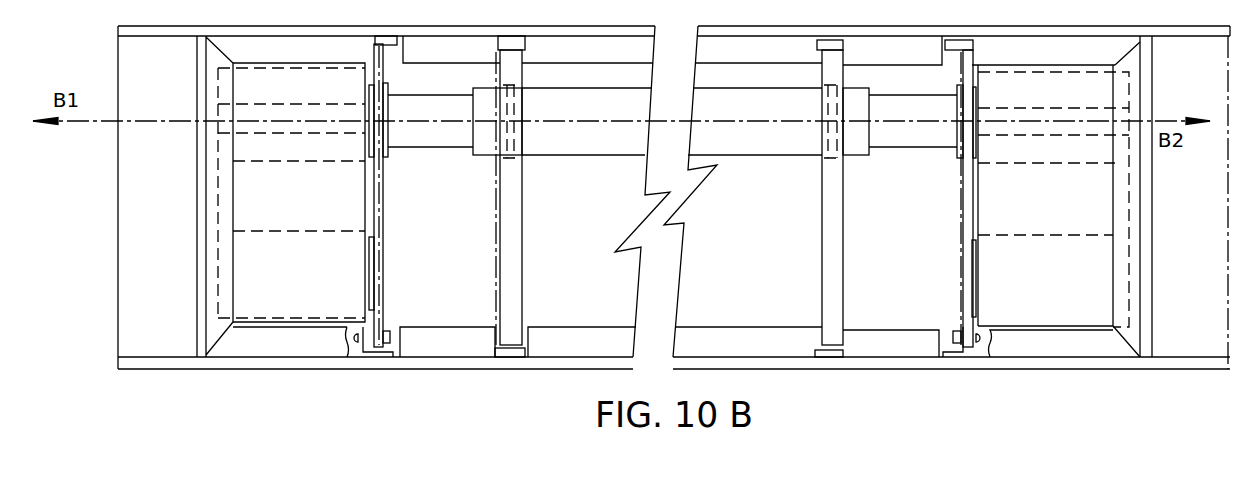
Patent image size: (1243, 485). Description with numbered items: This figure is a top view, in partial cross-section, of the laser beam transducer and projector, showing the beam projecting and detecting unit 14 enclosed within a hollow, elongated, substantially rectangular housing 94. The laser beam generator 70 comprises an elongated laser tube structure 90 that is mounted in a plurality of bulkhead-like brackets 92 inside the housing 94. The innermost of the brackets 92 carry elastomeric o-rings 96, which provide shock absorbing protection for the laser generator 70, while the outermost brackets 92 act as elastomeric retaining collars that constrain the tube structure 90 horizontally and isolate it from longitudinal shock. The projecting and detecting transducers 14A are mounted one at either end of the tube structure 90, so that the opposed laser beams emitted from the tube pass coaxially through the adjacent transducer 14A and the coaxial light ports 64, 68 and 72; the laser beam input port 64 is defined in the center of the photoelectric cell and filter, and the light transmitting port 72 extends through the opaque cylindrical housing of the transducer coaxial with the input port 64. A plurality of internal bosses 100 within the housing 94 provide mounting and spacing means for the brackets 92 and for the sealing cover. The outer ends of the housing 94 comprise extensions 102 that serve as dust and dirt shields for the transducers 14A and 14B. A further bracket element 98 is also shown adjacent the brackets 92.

The beam projecting and detecting unit 14 is at (550, 279).
The projecting and detecting transducer 14A is at (303, 196).
The transducer 14B is at (303, 303).
The laser beam input port 64 is at (1056, 199).
The light port 68 is at (1102, 199).
The light transmitting port 72 is at (1128, 108).
The laser beam generator 70 is at (737, 118).
The laser tube structure 90 is at (797, 154).
The bracket 92 is at (377, 306).
The housing 94 is at (820, 32).
The elastomeric o-ring 96 is at (513, 118).
The bracket 98 is at (385, 157).
The internal boss 100 is at (600, 87).
The extension 102 is at (1200, 320).